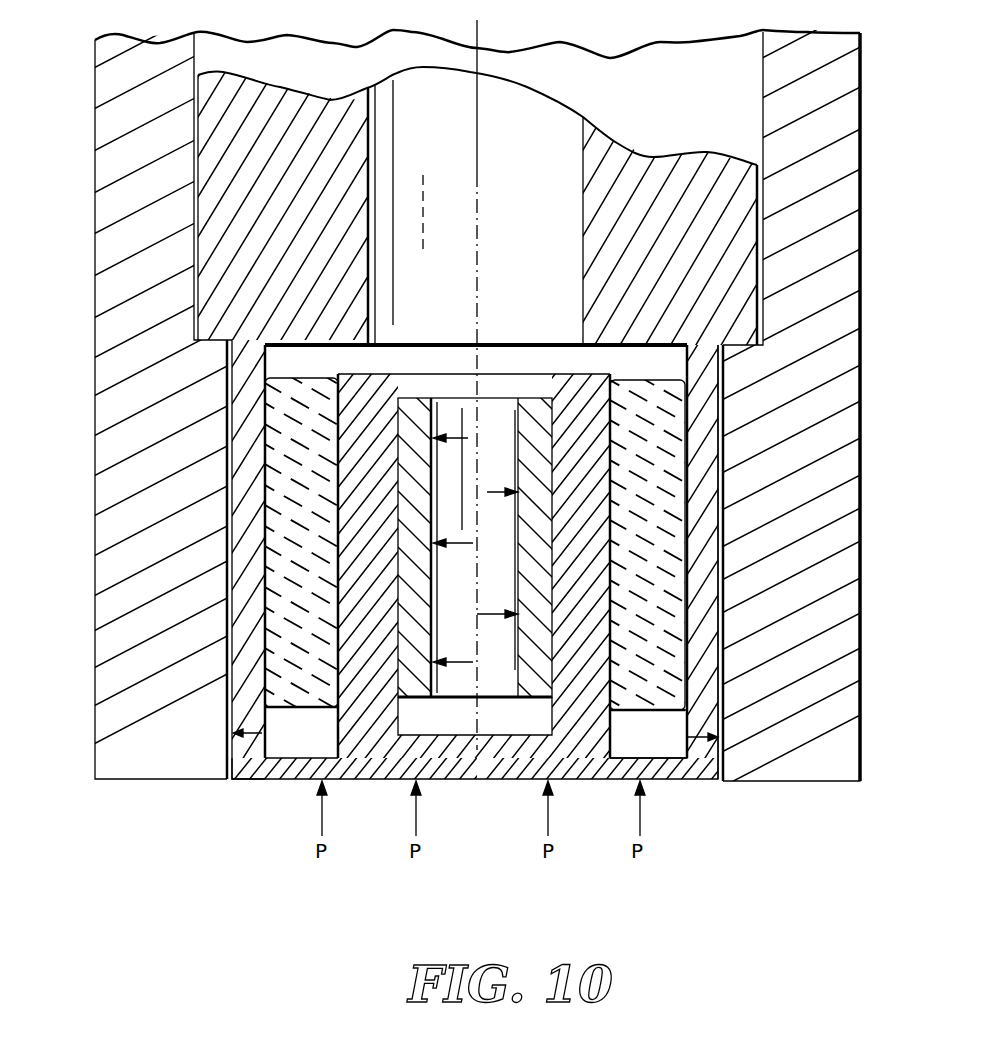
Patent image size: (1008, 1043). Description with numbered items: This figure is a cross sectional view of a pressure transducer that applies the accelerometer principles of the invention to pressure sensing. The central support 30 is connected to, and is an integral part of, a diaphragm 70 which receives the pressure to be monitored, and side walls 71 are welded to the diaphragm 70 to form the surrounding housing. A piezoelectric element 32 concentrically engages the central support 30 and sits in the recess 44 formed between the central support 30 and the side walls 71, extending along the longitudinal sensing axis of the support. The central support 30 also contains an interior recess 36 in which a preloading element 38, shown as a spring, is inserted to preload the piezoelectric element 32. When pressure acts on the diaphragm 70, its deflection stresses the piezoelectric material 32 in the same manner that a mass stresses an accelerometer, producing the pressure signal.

The central support 30 is at (345, 624).
The piezoelectric element 32 is at (283, 466).
The recess 36 is at (551, 712).
The preloading element 38 is at (517, 418).
The recess 44 is at (688, 738).
The diaphragm 70 is at (250, 788).
The side walls 71 is at (700, 667).